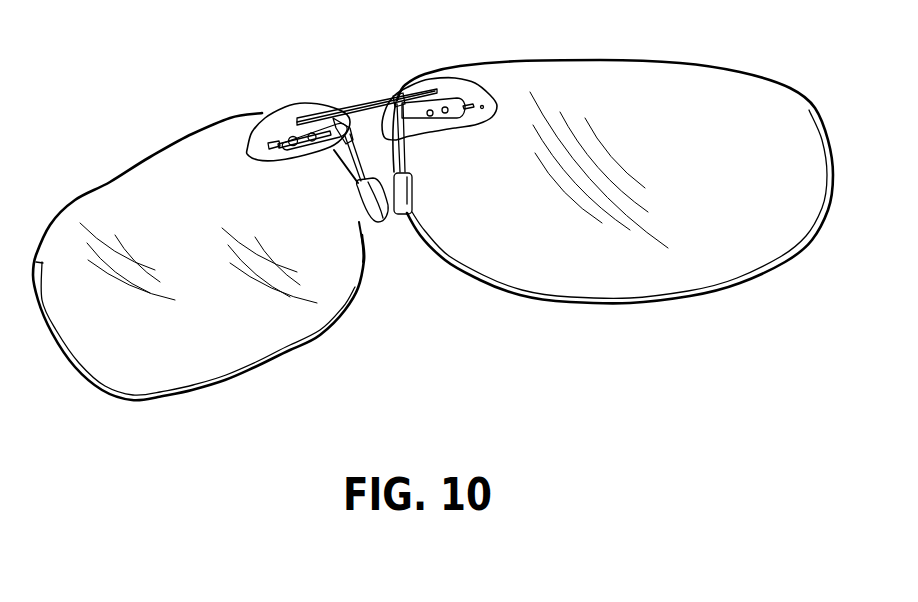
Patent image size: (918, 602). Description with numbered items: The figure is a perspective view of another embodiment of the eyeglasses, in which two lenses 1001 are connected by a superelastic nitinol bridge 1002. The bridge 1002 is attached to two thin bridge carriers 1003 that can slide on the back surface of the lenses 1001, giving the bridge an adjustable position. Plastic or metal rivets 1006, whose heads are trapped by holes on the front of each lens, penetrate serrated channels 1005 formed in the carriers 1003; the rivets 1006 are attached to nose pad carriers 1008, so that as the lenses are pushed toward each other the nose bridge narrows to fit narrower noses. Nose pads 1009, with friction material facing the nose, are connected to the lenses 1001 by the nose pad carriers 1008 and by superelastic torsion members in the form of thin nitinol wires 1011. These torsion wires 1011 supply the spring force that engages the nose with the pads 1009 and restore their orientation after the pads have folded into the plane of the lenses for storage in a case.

The lenses 1001 is at (652, 280).
The superelastic bridge 1002 is at (360, 100).
The bridge carriers 1003 is at (292, 118).
The serrated channels 1005 is at (270, 144).
The rivets 1006 is at (283, 152).
The nose pad carriers 1008 is at (303, 148).
The nose pads 1009 is at (378, 221).
The nitinol wires 1011 is at (398, 96).